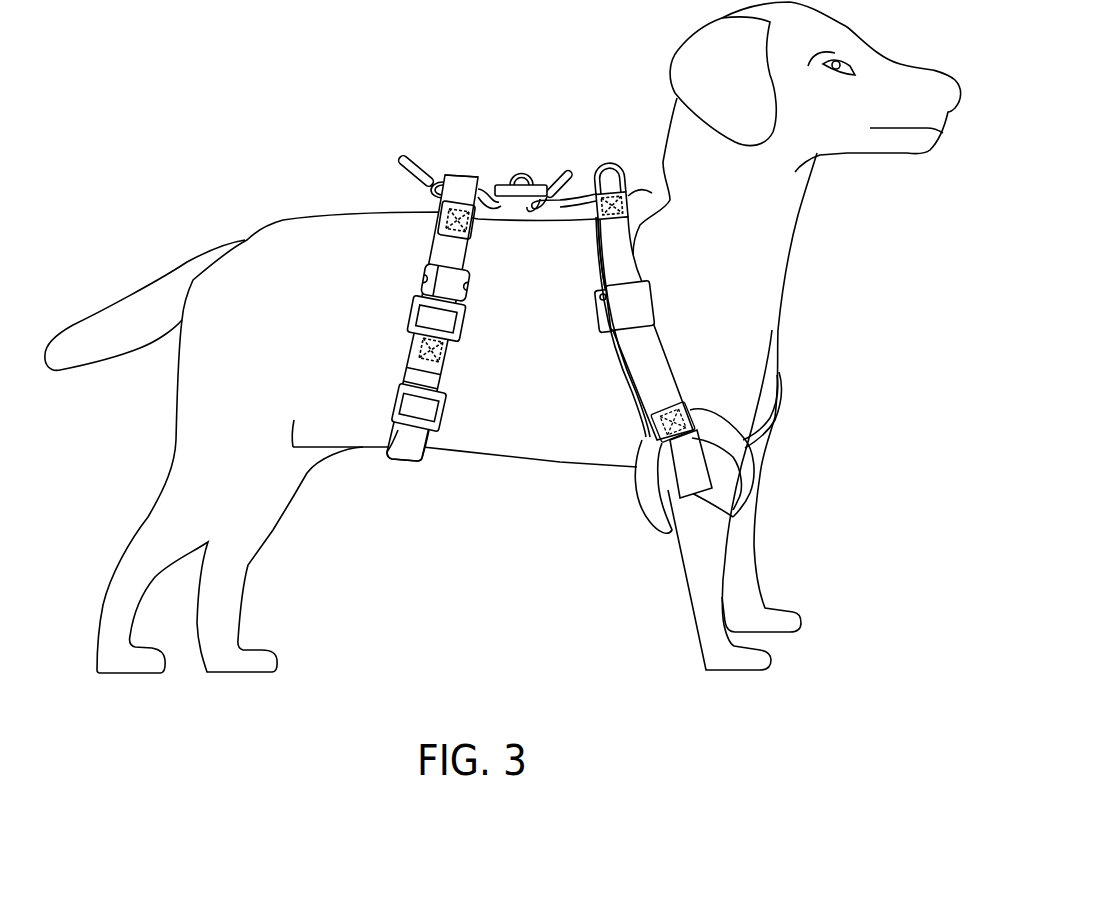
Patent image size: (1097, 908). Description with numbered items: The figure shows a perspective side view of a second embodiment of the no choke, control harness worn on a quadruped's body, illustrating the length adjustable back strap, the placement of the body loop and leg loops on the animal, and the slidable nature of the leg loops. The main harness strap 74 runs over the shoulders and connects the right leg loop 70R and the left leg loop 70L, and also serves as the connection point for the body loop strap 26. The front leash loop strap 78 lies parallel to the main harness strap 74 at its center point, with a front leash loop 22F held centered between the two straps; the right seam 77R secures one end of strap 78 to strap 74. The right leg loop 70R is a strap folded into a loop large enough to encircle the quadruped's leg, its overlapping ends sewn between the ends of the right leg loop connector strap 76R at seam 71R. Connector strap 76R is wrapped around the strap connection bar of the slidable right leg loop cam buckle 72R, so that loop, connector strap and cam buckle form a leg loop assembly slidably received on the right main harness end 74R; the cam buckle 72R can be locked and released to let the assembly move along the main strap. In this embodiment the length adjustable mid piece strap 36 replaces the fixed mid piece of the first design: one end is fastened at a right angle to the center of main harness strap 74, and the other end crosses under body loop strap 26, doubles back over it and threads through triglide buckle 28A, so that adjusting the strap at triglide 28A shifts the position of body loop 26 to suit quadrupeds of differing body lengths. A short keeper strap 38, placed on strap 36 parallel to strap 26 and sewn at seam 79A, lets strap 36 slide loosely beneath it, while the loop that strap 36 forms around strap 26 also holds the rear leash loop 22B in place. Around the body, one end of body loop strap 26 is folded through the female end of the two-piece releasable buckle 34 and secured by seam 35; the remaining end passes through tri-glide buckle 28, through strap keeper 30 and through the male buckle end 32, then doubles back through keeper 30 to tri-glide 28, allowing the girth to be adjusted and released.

The rear leash loop 22B is at (400, 152).
The keeper strap 38 is at (458, 175).
The triglide buckle 28A is at (500, 184).
The length adjustable mid piece strap 36 is at (563, 172).
The front leash loop 22F is at (609, 164).
The seam 79A is at (440, 211).
The body loop strap 26 is at (427, 251).
The female end of two piece releasable buckle 34 is at (425, 284).
The male end of two-piece buckle 32 is at (408, 317).
The seam 35 is at (447, 350).
The strap keeper 30 is at (450, 400).
The tri-glide buckle 28 is at (392, 406).
The front leash loop strap 78 is at (592, 205).
The right seam 77R is at (600, 247).
The main harness strap 74 is at (640, 175).
The slidable right leg loop cam buckle 72R is at (642, 279).
The right leg loop connector strap 76R is at (660, 338).
The seam 71R is at (683, 408).
The right leg loop 70R is at (648, 498).
The right main harness end 74R is at (753, 510).
The left leg loop 70L is at (782, 416).